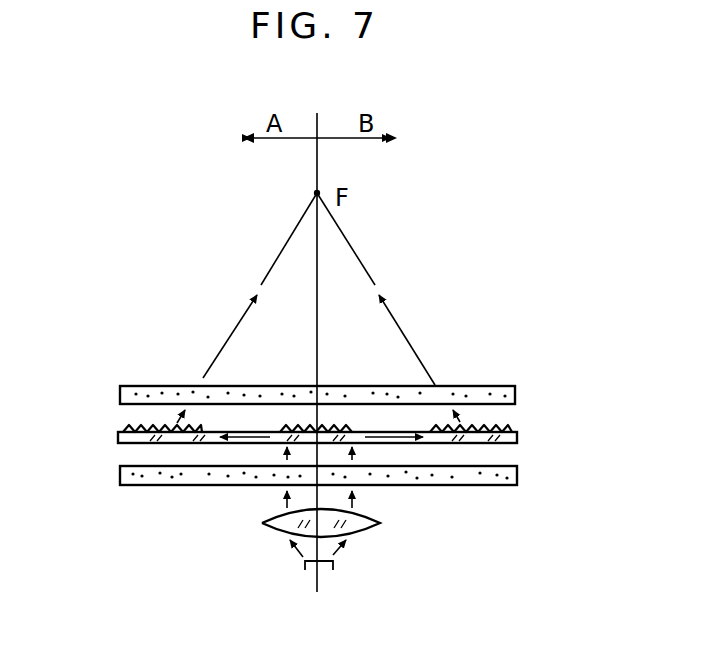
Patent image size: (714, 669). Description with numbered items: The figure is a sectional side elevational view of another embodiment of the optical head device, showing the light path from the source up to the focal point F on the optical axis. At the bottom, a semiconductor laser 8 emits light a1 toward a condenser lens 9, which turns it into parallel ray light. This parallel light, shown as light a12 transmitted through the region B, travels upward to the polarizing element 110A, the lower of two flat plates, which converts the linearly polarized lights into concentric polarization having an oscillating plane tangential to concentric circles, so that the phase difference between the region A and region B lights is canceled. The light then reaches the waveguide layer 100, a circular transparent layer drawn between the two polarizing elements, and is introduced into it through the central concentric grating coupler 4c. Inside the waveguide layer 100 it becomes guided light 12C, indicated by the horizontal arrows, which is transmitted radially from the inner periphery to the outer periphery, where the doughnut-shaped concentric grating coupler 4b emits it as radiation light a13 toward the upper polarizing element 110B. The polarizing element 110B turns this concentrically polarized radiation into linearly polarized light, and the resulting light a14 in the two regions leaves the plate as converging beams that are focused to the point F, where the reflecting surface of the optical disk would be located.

The light a14 is at (228, 332).
The polarizing element 110B is at (517, 395).
The waveguide layer 100 is at (333, 407).
The grating coupler 4b is at (143, 428).
The grating coupler 4c is at (333, 425).
The guided light 12C is at (395, 432).
The light a13 is at (462, 413).
The polarizing element 110A is at (517, 475).
The light a12 is at (358, 455).
The condenser lens 9 is at (362, 532).
The semiconductor laser 8 is at (335, 565).
The light a1 is at (294, 552).